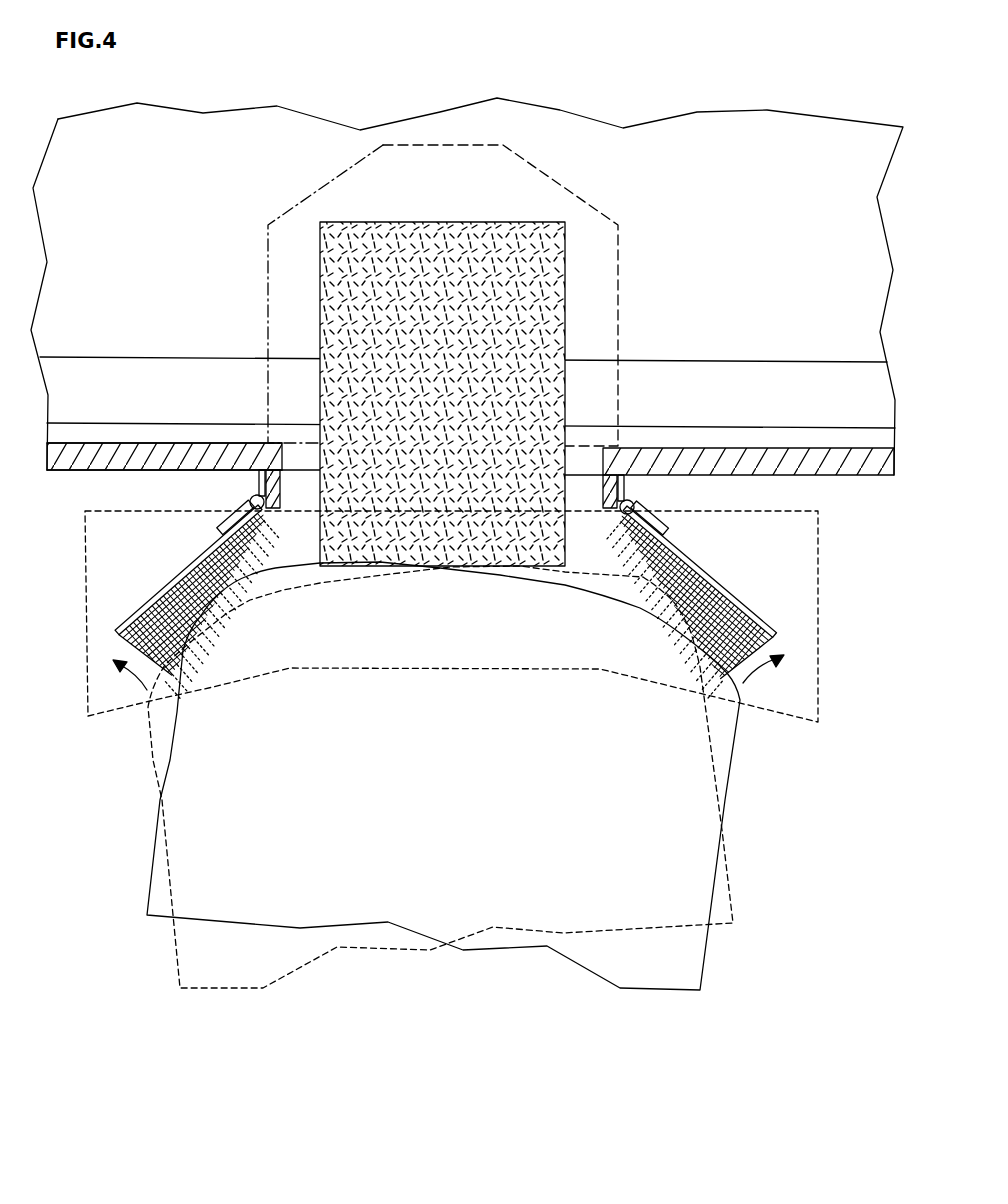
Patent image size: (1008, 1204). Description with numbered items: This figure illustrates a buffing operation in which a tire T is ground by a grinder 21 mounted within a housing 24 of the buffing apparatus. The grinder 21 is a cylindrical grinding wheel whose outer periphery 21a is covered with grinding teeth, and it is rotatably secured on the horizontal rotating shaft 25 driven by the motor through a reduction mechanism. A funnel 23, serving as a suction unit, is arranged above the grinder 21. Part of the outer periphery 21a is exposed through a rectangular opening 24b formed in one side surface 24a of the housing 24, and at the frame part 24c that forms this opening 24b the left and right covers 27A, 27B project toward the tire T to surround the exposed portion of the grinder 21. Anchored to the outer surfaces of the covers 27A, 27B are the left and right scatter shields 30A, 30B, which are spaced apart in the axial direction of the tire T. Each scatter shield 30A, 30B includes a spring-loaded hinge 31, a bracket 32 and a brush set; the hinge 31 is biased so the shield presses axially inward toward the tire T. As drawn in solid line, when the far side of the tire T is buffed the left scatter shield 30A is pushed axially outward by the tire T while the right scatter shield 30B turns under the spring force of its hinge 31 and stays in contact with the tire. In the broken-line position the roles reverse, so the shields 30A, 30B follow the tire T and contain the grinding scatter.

The grinder 21 is at (556, 211).
The outer periphery 21a is at (443, 240).
The funnel 23 is at (623, 267).
The housing 24 is at (890, 485).
The side surface 24a is at (73, 472).
The opening 24b is at (257, 483).
The frame part 24c is at (285, 492).
The rotating shaft 25 is at (693, 361).
The left cover 27A is at (290, 495).
The right cover 27B is at (604, 492).
The left scatter shield 30A is at (107, 627).
The right scatter shield 30B is at (795, 628).
The hinge 31 is at (249, 495).
The bracket 32 is at (237, 543).
The tire T is at (158, 817).